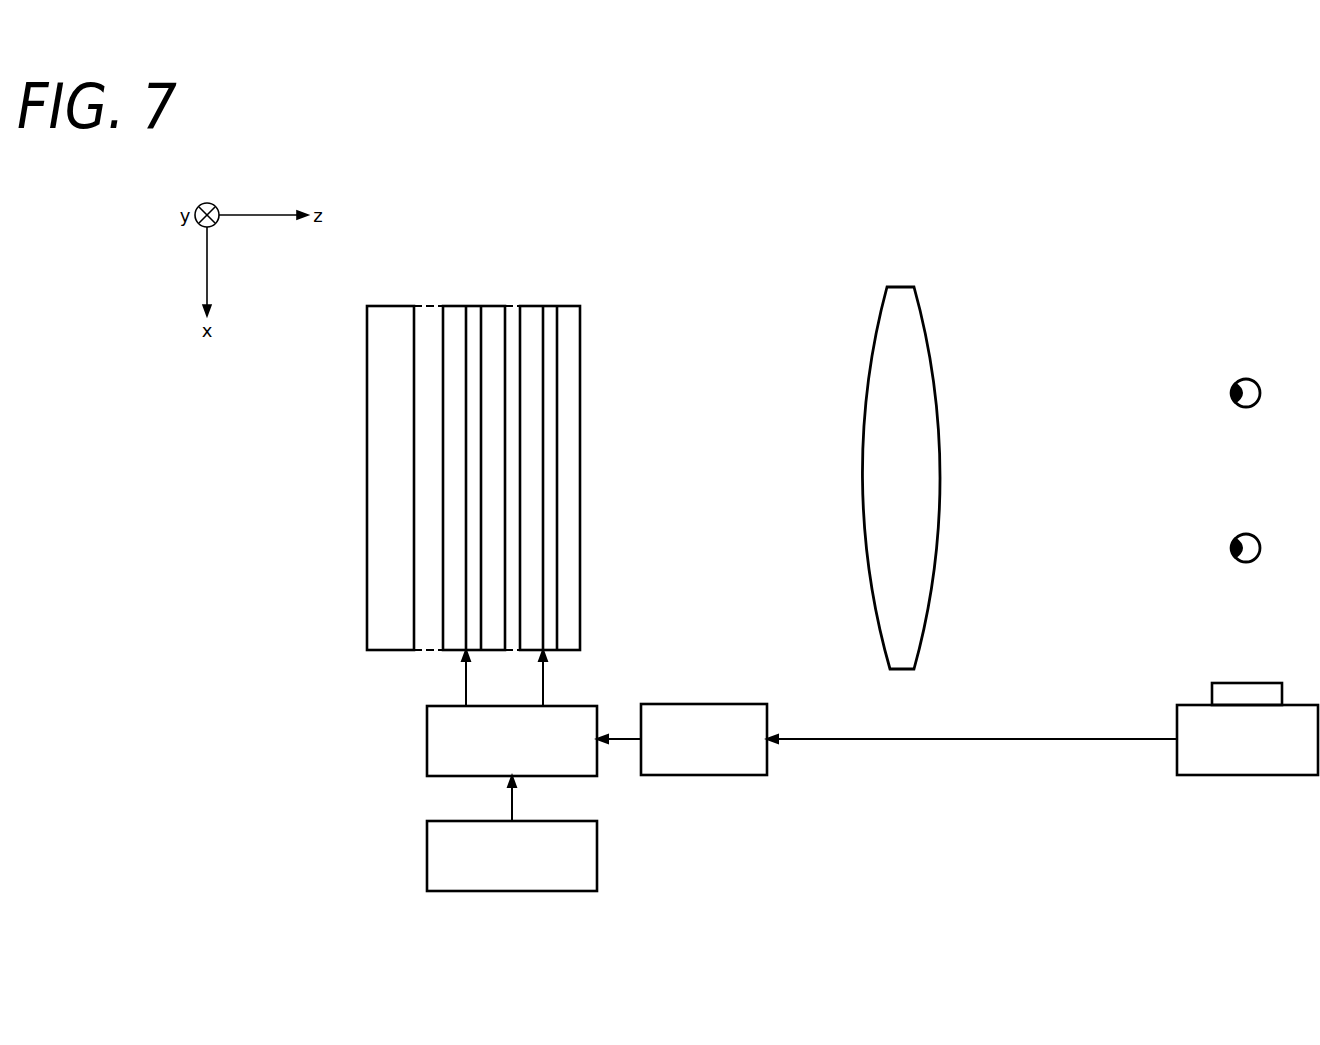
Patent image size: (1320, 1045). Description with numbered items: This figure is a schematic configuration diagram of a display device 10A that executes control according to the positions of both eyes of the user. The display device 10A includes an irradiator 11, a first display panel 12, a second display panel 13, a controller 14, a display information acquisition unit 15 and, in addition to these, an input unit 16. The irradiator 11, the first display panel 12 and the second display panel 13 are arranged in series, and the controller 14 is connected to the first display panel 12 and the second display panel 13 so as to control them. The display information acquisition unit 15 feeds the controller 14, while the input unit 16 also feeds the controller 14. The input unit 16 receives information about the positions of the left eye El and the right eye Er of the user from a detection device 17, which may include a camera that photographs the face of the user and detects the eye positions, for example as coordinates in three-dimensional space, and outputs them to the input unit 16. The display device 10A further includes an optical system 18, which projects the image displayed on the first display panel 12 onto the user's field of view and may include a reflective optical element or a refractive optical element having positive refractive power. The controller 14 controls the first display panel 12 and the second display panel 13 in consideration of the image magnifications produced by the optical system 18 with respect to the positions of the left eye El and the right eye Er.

The display device 10A is at (272, 777).
The irradiator 11 is at (384, 306).
The first display panel 12 is at (471, 297).
The second display panel 13 is at (546, 297).
The controller 14 is at (427, 741).
The display information acquisition unit 15 is at (427, 850).
The input unit 16 is at (698, 704).
The detection device 17 is at (1254, 776).
The optical system 18 is at (926, 313).
The right eye Er is at (1261, 393).
The left eye El is at (1261, 548).